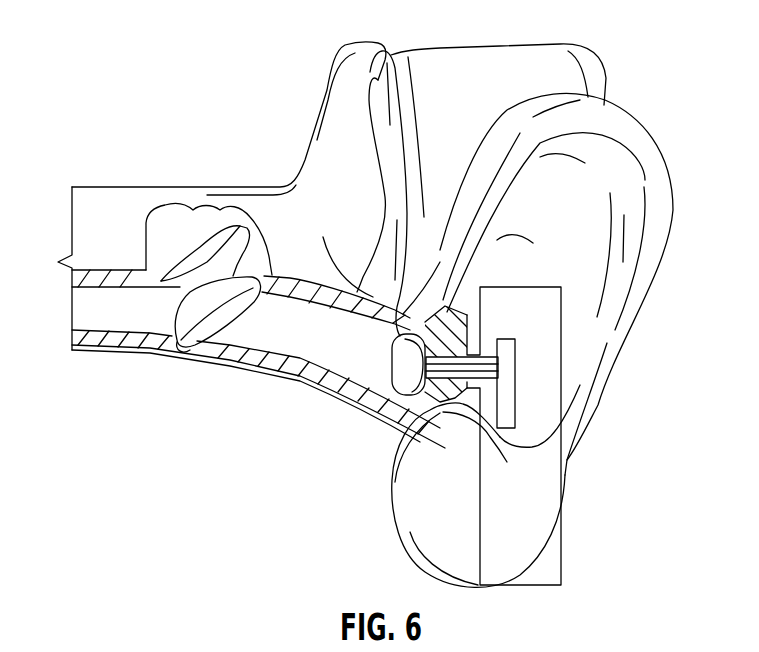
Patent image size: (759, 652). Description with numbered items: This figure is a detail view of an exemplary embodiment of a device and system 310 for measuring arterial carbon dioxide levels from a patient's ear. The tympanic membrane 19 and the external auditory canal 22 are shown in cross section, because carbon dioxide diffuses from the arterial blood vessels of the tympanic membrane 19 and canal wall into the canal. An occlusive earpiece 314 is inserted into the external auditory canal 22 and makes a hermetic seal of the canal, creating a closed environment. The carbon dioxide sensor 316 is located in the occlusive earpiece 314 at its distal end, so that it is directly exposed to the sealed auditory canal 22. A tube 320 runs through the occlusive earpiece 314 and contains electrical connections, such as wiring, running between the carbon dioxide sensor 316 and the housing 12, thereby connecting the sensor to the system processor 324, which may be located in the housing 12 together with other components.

The device and system for measuring arterial carbon dioxide levels 310 is at (645, 52).
The housing 12 is at (540, 385).
The tympanic membrane 19 is at (195, 352).
The external auditory canal 22 is at (272, 330).
The occlusive earpiece 314 is at (408, 420).
The carbon dioxide sensor 316 is at (390, 362).
The tube 320 is at (444, 404).
The system processor 324 is at (518, 410).